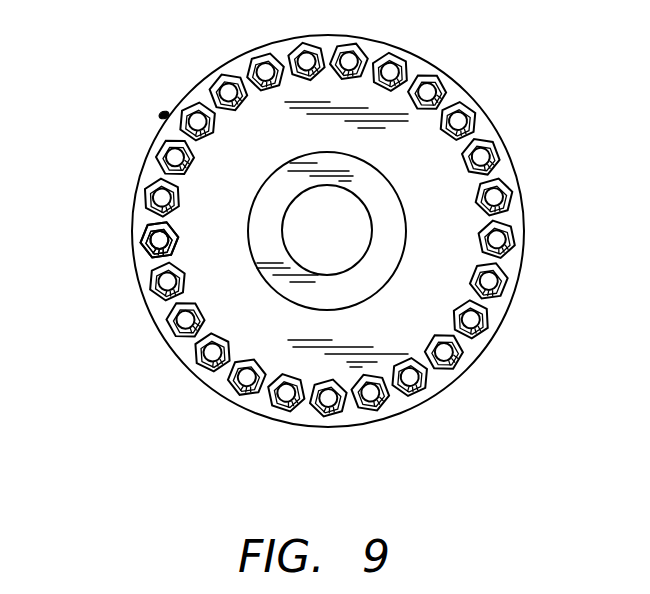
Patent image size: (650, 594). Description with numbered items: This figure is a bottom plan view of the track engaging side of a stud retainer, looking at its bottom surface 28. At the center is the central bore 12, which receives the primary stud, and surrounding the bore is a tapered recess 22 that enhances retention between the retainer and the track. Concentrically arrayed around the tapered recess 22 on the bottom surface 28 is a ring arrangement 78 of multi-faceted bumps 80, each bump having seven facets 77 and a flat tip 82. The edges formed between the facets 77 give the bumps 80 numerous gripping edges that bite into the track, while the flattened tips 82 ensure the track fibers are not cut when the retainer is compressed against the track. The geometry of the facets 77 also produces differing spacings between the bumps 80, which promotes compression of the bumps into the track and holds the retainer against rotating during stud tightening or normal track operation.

The central bore 12 is at (372, 238).
The tapered recess 22 is at (375, 177).
The bottom surface 28 is at (446, 248).
The facets 77 is at (175, 320).
The ring arrangement 78 is at (185, 120).
The multi-faceted bumps 80 is at (150, 236).
The flat tips 82 is at (152, 253).